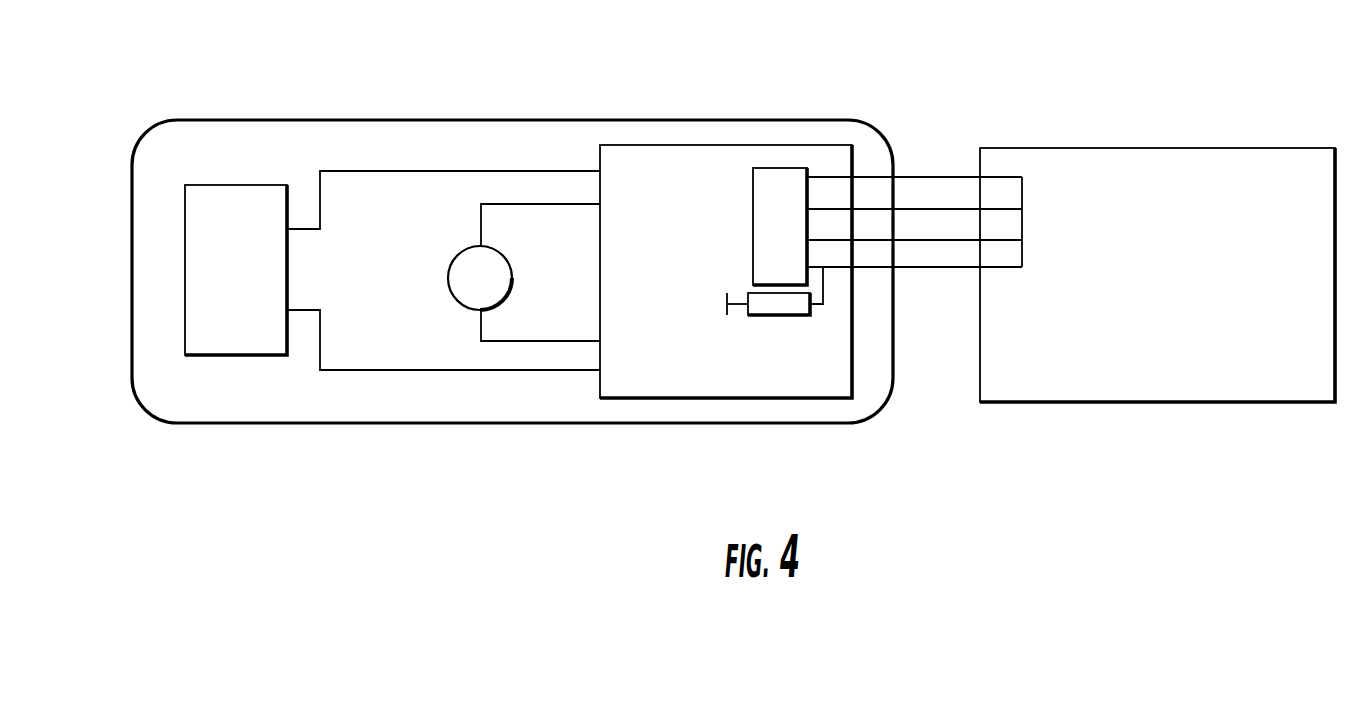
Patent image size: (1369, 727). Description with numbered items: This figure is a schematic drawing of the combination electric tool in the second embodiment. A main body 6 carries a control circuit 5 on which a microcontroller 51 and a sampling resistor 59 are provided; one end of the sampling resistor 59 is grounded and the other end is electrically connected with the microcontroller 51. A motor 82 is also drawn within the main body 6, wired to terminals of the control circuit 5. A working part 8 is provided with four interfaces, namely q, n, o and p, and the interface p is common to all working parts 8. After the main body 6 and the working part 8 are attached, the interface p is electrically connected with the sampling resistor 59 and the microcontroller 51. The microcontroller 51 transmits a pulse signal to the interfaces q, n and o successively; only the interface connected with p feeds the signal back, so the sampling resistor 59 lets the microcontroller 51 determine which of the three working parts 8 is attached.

The main body 6 is at (267, 392).
The control circuit 5 is at (652, 183).
The motor 82 is at (470, 300).
The microcontroller 51 is at (777, 195).
The sampling resistor 59 is at (783, 302).
The working part 8 is at (1263, 370).